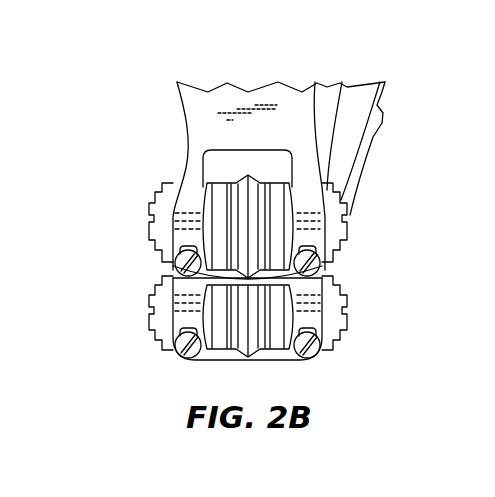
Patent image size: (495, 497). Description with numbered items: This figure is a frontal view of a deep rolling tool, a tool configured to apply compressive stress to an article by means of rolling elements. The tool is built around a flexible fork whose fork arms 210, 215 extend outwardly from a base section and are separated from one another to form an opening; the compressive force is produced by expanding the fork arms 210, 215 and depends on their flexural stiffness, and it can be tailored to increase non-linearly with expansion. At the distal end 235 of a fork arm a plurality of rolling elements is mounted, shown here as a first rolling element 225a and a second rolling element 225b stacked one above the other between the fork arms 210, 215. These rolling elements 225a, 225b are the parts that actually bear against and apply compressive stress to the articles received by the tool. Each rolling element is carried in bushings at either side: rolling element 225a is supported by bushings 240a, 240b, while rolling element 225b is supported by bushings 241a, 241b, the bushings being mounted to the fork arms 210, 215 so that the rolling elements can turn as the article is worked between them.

The fork arm 210 is at (240, 100).
The fork arm 215 is at (362, 141).
The distal end 235 is at (187, 140).
The rolling element 225a is at (230, 238).
The rolling element 225b is at (229, 303).
The bushing 240a is at (150, 206).
The bushing 240b is at (340, 237).
The bushing 241a is at (163, 332).
The bushing 241b is at (340, 317).